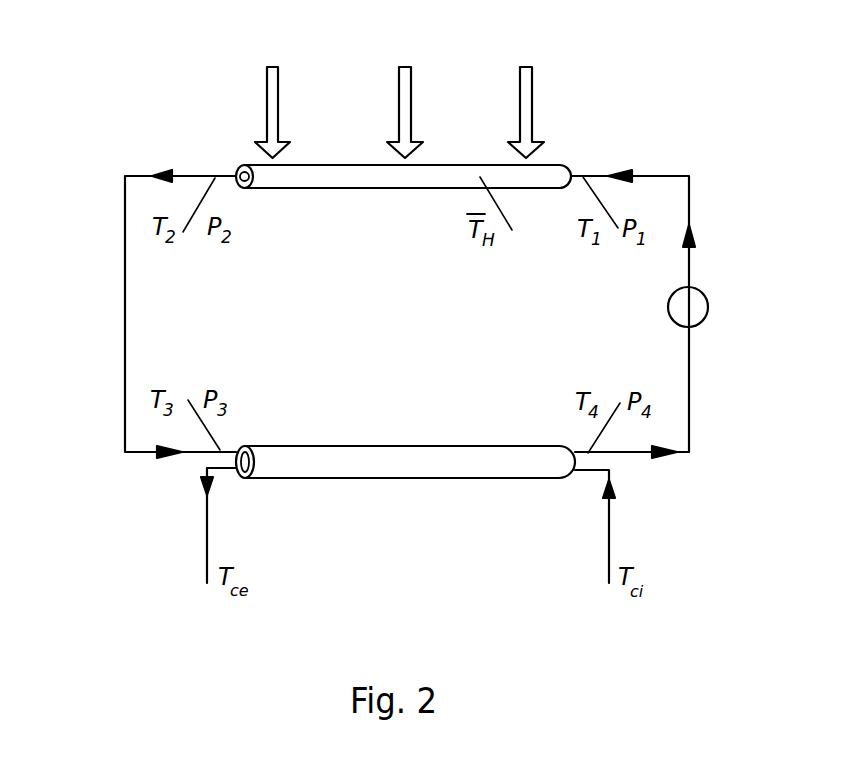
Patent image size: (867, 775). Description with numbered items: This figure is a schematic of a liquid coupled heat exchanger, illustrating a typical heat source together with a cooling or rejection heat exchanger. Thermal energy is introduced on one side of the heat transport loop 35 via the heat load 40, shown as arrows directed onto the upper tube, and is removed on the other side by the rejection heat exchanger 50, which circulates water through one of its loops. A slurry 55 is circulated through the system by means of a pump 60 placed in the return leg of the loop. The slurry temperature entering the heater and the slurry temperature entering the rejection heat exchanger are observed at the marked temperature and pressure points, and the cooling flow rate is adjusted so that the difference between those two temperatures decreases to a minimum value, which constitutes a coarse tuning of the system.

The heat transport loop 35 is at (362, 177).
The heat load Q 40 is at (399, 87).
The rejection heat exchanger 50 is at (400, 463).
The slurry 55 is at (125, 308).
The pump 60 is at (708, 293).